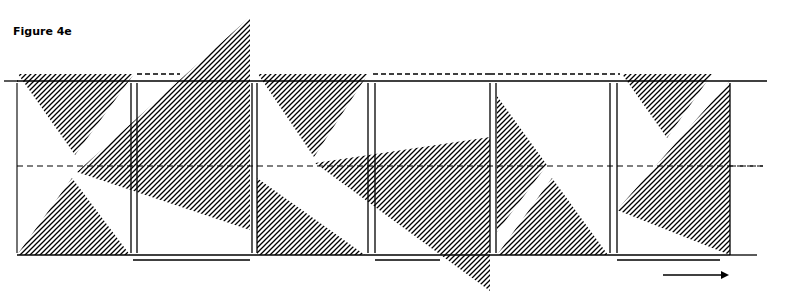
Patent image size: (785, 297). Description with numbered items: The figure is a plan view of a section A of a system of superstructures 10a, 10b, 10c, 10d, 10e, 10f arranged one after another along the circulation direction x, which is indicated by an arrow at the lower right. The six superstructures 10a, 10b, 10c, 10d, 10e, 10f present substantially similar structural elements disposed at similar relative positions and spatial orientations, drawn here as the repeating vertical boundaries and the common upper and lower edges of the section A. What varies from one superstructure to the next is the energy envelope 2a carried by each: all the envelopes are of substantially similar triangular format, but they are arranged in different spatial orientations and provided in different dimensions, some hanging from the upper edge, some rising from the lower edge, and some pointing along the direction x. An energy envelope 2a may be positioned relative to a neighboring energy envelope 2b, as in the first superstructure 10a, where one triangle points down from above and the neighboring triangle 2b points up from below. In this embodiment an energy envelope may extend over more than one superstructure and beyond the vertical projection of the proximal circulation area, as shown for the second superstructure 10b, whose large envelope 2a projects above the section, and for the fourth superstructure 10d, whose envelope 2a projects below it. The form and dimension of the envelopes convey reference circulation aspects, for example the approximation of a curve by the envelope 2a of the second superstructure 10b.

The superstructure 10a is at (74, 153).
The second superstructure 10b is at (191, 156).
The superstructure 10c is at (310, 153).
The fourth superstructure 10d is at (429, 156).
The superstructure 10e is at (555, 153).
The superstructure 10f is at (670, 156).
The energy envelope 2a is at (254, 154).
The neighboring energy envelope 2b is at (73, 216).
The section A is at (746, 201).
The circulation direction x is at (708, 276).